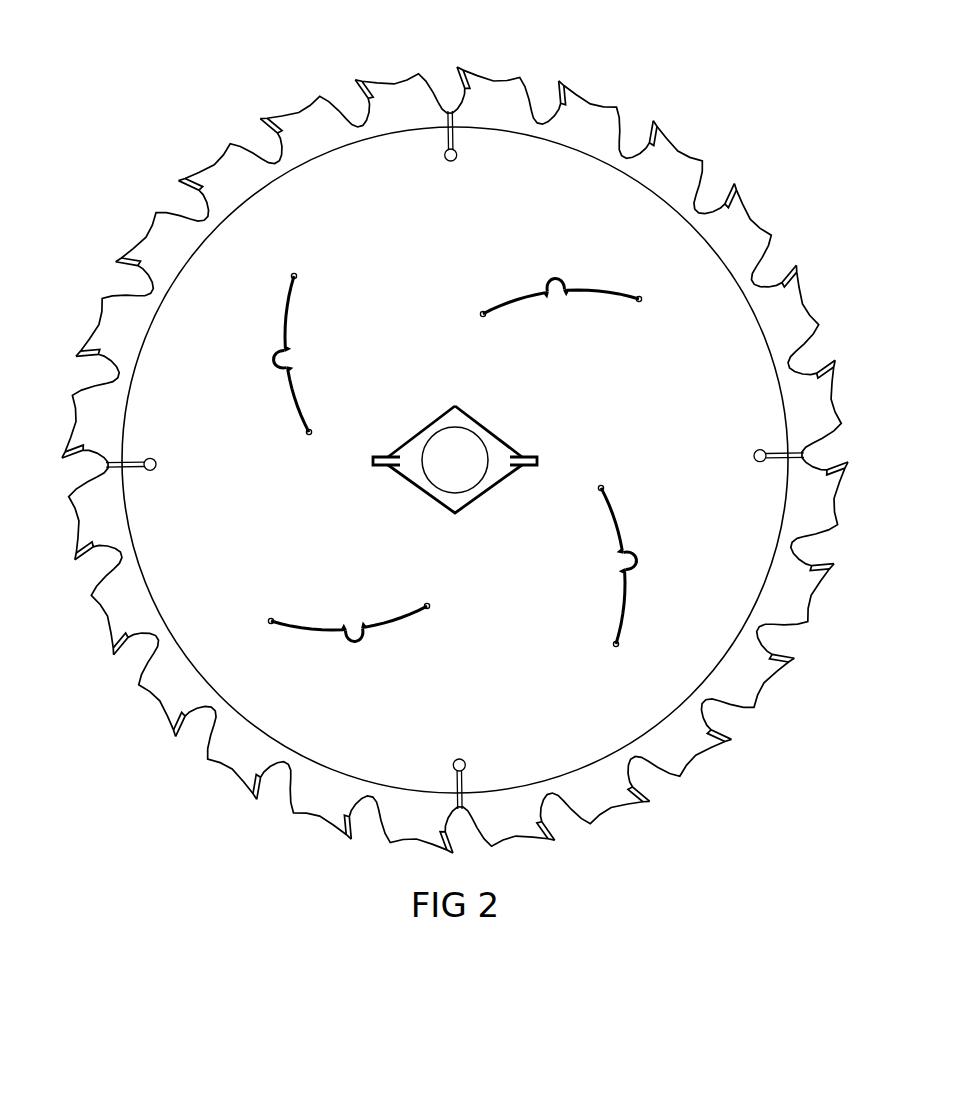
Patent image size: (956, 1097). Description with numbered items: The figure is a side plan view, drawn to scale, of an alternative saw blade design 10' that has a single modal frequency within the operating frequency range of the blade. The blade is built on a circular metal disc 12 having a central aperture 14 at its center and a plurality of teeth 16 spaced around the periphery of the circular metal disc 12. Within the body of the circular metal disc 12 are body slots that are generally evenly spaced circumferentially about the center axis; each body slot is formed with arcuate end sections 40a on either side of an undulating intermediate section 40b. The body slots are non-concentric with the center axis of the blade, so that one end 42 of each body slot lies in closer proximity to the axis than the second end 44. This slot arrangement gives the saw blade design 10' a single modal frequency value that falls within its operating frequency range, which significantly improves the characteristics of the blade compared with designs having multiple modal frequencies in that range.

The alternative saw blade design 10' is at (455, 448).
The circular metal disc 12 is at (684, 430).
The central aperture 14 is at (484, 468).
The teeth 16 is at (358, 82).
The arcuate end sections 40a is at (511, 300).
The undulating intermediate section 40b is at (556, 278).
The one end of the body slot 42 is at (480, 315).
The second end of the body slot 44 is at (642, 299).